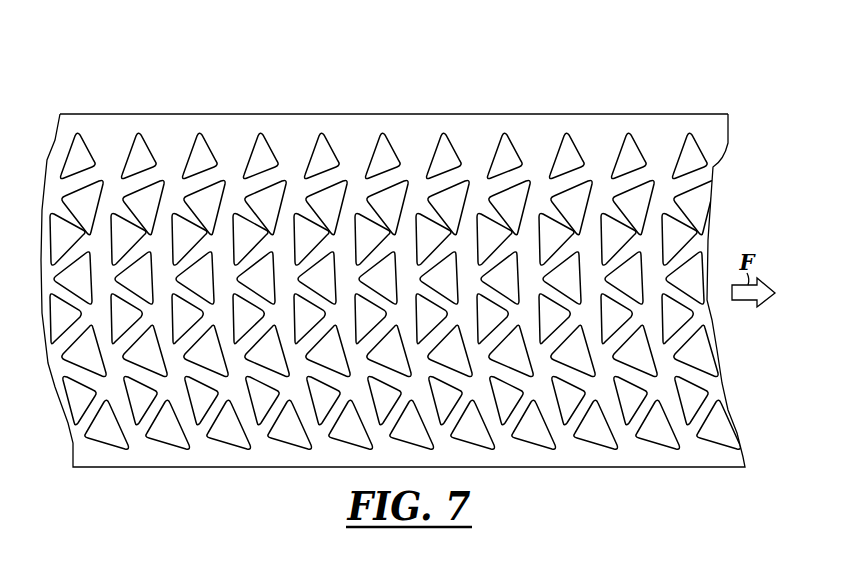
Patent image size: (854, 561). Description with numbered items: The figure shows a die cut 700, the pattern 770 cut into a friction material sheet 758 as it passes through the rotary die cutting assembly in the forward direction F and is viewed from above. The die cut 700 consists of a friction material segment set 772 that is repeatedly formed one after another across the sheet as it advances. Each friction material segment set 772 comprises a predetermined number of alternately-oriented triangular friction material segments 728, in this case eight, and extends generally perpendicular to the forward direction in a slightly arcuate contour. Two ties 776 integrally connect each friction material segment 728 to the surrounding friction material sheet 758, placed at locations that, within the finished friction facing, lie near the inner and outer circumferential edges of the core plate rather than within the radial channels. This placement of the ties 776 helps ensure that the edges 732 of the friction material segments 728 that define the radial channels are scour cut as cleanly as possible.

The die cut 700 is at (213, 86).
The friction material sheet 758 is at (107, 132).
The edges of the friction material segments 732 is at (147, 145).
The friction material segment 728 is at (258, 200).
The pattern of friction material segments 770 is at (354, 135).
The friction material segment set 772 is at (422, 114).
The tie 776 is at (603, 158).